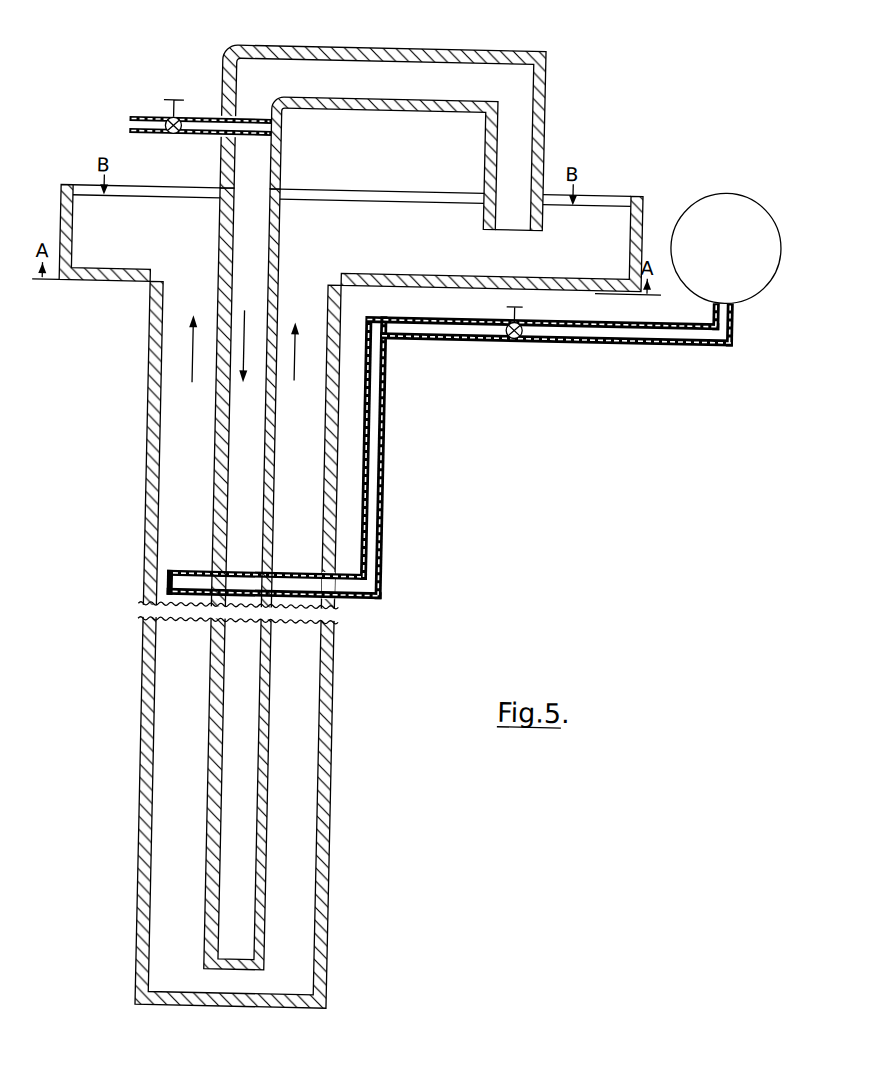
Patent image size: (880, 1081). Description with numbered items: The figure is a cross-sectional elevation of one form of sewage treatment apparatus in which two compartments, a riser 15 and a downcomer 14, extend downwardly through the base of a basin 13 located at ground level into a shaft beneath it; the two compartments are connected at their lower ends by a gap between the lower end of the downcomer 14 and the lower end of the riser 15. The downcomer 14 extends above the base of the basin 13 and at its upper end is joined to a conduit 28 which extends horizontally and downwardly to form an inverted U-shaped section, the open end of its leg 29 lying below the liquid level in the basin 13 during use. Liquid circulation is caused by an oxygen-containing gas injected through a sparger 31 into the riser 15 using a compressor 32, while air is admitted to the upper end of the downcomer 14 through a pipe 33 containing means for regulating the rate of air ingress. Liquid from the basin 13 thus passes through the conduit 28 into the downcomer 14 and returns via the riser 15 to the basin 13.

The basin 13 is at (572, 221).
The downcomer 14 is at (261, 456).
The riser 15 is at (312, 488).
The conduit 28 is at (330, 70).
The leg 29 is at (518, 122).
The sparger 31 is at (326, 580).
The compressor 32 is at (718, 195).
The pipe 33 is at (244, 117).